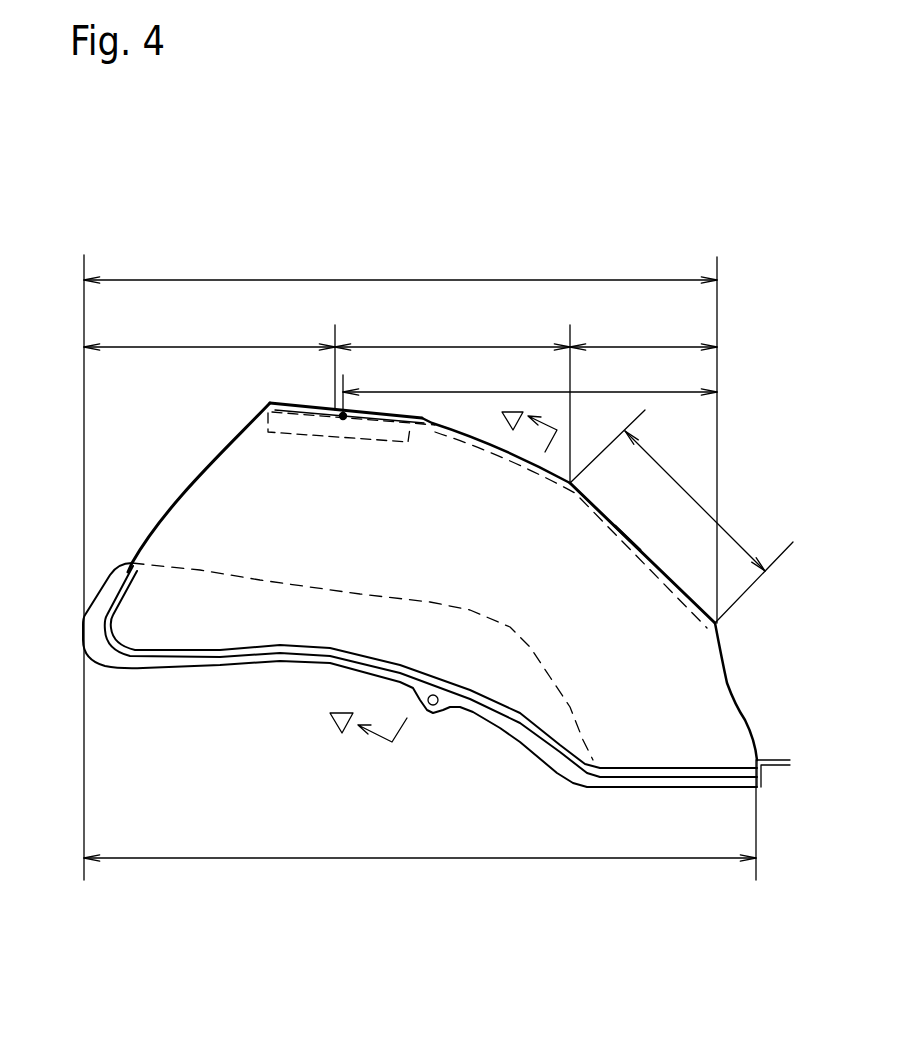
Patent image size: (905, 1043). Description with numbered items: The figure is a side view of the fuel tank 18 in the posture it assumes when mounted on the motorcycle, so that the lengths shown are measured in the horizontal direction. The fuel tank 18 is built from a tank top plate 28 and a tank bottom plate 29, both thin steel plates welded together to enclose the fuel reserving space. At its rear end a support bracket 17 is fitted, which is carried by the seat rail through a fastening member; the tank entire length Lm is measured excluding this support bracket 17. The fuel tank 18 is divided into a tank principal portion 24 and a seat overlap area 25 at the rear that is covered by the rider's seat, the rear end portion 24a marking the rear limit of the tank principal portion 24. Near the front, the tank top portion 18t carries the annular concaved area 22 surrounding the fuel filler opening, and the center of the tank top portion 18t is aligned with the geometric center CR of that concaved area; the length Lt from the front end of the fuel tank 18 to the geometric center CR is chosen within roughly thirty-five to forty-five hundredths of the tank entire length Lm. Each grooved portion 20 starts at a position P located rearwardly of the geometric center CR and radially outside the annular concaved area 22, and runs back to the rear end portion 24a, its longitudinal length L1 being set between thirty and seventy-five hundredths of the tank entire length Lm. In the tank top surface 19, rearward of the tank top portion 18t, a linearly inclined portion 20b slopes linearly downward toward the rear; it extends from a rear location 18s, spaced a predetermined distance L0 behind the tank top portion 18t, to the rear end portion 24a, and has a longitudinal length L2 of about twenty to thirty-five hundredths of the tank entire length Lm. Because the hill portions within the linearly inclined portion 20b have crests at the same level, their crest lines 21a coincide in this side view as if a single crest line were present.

The support bracket 17 is at (777, 758).
The fuel tank 18 is at (163, 507).
The rear location 18s is at (568, 326).
The tank top portion 18t is at (267, 403).
The tank top surface 19 is at (608, 520).
The grooved portion 20 is at (650, 558).
The linearly inclined portion 20b is at (670, 477).
The crest line 21a is at (627, 538).
The annular concaved area 22 is at (408, 440).
The tank principal portion 24 is at (417, 280).
The rear end portion 24a is at (718, 623).
The seat overlap area 25 is at (732, 692).
The tank top plate 28 is at (233, 468).
The tank bottom plate 29 is at (260, 580).
The position P is at (343, 420).
The geometric center CR is at (343, 412).
The length Lt is at (197, 347).
The predetermined distance L0 is at (455, 346).
The longitudinal length L1 is at (610, 392).
The longitudinal length L2 is at (627, 346).
The tank entire length Lm is at (460, 858).